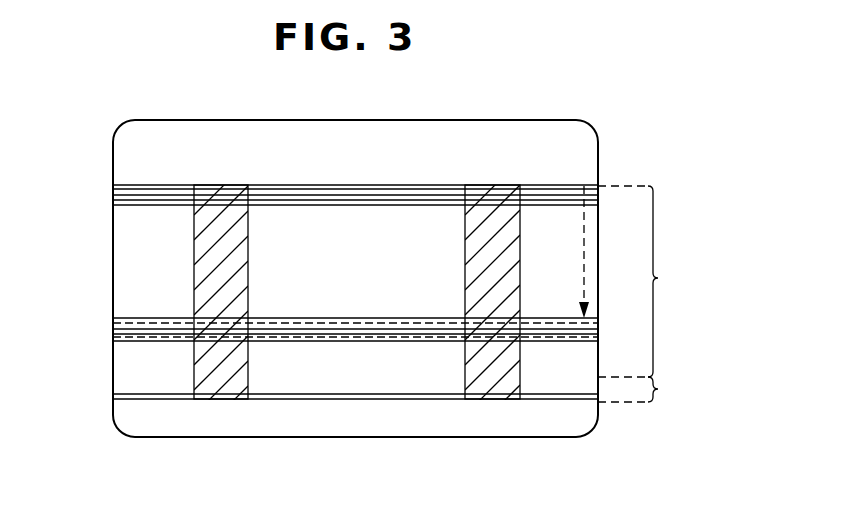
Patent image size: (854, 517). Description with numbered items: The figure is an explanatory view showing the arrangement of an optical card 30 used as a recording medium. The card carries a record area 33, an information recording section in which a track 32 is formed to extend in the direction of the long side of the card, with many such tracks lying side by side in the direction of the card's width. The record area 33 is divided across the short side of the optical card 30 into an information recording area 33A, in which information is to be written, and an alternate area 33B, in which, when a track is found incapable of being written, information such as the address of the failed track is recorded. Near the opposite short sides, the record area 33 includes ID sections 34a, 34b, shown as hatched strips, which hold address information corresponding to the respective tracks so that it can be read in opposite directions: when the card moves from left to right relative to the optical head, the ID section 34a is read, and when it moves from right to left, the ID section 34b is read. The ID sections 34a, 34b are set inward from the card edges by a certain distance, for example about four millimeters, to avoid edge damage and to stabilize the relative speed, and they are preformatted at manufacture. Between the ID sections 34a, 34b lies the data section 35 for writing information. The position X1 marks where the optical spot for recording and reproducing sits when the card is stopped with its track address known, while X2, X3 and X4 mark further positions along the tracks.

The optical card 30 is at (450, 117).
The track 32 is at (568, 180).
The record area 33 is at (63, 183).
The information recording area 33A is at (651, 281).
The alternate area 33B is at (651, 389).
The ID section 34a is at (223, 390).
The ID section 34b is at (493, 390).
The data section 35 is at (372, 387).
The position X1 is at (586, 185).
The position X2 is at (582, 330).
The position X3 is at (131, 328).
The position X4 is at (131, 338).